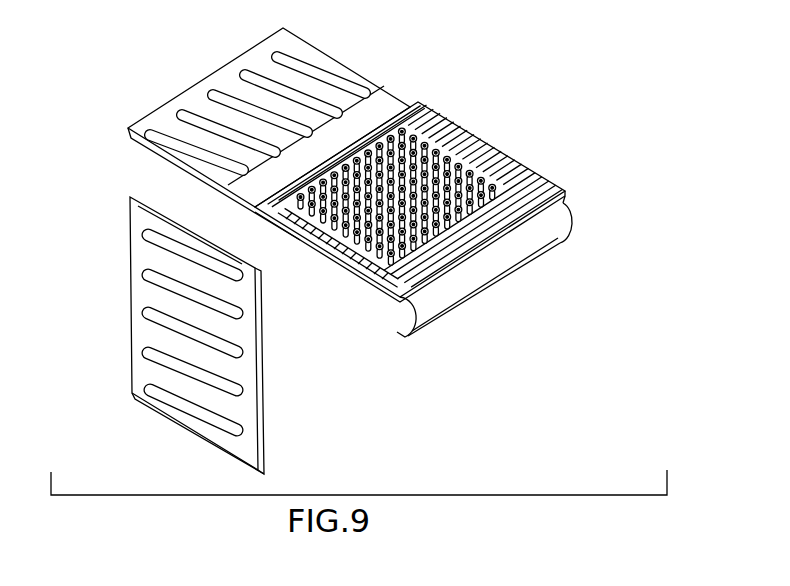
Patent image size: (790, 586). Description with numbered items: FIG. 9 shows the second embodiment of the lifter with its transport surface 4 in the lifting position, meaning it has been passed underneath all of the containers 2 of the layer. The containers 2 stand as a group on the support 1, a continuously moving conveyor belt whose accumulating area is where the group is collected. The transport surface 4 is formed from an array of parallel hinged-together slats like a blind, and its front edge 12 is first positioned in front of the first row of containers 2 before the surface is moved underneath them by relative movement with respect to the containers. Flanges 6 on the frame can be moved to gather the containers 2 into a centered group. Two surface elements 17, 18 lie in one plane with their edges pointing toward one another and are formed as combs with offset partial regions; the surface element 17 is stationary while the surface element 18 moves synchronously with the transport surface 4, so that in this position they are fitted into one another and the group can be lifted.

The support 1 is at (550, 232).
The containers 2 is at (470, 132).
The transport surface 4 is at (512, 162).
The flanges 6 is at (460, 267).
The front edge 12 is at (413, 110).
The surface element 17 is at (282, 40).
The surface element 18 is at (316, 80).